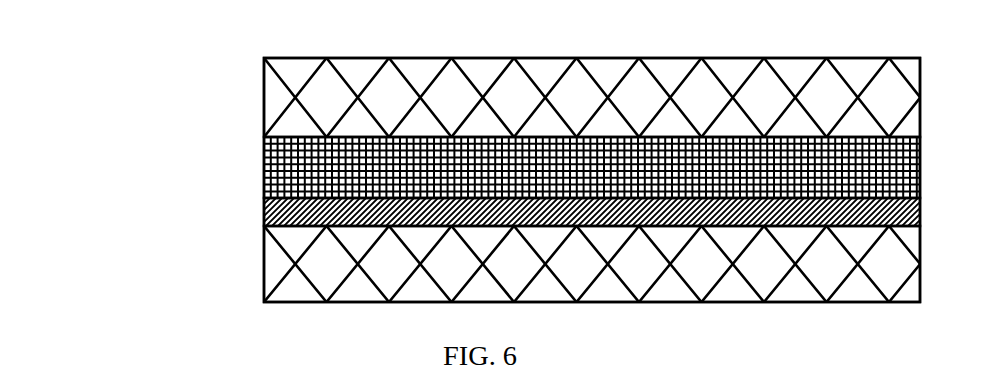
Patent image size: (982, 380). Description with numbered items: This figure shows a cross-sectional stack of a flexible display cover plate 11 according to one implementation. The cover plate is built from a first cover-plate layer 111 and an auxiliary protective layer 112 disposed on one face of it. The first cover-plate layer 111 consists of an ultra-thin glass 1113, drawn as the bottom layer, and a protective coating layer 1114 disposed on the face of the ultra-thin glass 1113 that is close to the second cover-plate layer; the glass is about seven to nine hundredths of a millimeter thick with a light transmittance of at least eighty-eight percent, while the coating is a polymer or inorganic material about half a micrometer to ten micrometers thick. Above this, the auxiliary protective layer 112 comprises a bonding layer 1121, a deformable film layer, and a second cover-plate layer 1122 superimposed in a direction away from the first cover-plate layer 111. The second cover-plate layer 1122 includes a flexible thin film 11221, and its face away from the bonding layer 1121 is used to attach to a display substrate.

The flexible display cover plate 11 is at (882, 39).
The auxiliary protective layer 112 is at (514, 128).
The second cover-plate layer 1122 is at (174, 102).
The flexible thin film 11221 is at (273, 101).
The bonding layer 1121 is at (270, 167).
The first cover-plate layer 111 is at (514, 250).
The protective coating layer 1114 is at (267, 213).
The ultra-thin glass 1113 is at (272, 263).